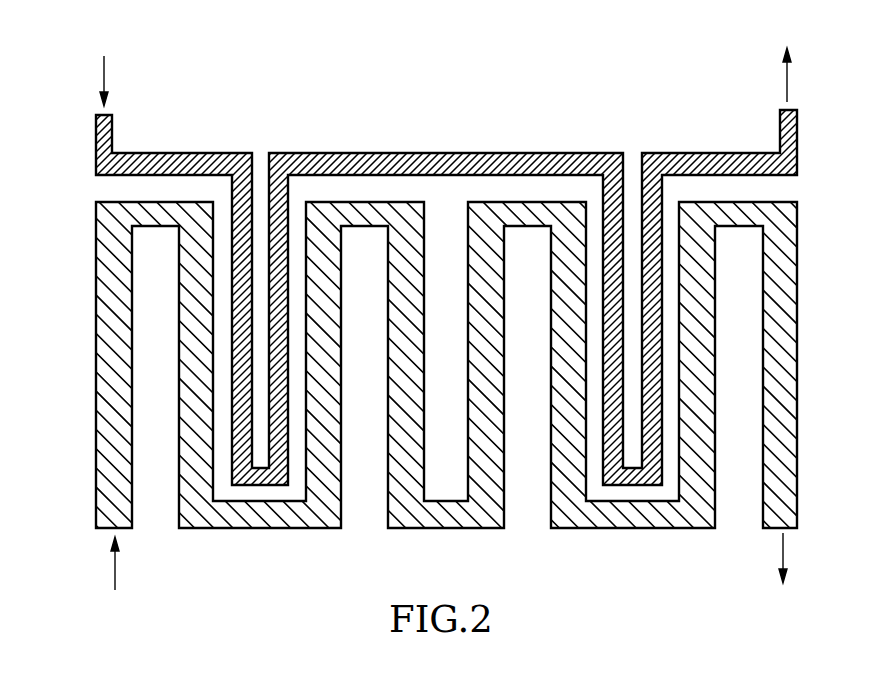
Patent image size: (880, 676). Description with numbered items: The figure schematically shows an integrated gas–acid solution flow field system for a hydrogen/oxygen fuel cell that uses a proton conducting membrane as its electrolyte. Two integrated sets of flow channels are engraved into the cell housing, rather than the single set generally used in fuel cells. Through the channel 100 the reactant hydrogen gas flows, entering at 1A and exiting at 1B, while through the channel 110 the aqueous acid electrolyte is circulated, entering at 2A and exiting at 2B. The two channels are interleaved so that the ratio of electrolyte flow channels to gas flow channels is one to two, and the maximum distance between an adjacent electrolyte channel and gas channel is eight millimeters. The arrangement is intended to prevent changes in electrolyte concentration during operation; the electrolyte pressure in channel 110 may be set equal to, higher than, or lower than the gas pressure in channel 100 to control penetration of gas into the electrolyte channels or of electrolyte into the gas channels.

The gas flow channel 100 is at (97, 303).
The electrolyte flow channel 110 is at (177, 153).
The reactant gas entrance 1A is at (119, 579).
The reactant gas exit 1B is at (787, 575).
The electrolyte entrance 2A is at (110, 67).
The electrolyte exit 2B is at (790, 63).